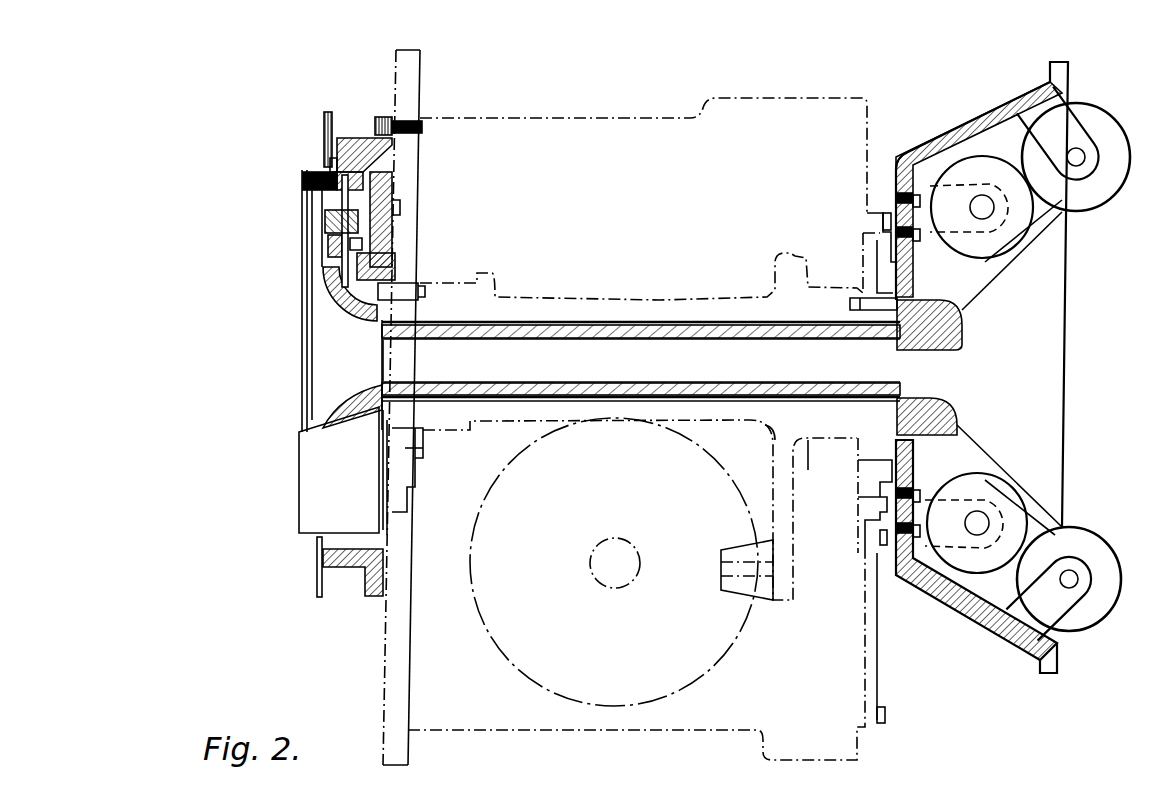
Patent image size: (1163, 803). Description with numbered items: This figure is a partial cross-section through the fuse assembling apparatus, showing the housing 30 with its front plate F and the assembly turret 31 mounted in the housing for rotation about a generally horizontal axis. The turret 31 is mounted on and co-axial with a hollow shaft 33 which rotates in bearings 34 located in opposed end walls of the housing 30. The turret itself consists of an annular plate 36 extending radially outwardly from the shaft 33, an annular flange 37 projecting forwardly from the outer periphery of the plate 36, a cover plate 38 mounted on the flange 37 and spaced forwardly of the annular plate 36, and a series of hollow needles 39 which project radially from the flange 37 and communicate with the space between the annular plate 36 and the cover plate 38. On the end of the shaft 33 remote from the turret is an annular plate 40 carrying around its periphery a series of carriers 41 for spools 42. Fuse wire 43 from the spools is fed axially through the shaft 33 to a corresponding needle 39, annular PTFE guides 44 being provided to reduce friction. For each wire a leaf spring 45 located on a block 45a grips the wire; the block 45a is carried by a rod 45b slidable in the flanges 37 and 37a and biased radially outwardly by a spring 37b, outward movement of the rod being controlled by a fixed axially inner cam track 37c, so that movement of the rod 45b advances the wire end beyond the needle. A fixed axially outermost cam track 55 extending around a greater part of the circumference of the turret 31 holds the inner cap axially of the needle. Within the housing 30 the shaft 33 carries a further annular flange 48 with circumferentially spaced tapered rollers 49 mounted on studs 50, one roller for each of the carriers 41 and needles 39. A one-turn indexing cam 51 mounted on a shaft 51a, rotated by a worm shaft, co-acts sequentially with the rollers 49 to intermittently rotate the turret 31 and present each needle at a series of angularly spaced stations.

The front plate F is at (416, 86).
The housing 30 is at (618, 145).
The assembly turret 31 is at (324, 473).
The hollow shaft 33 is at (412, 398).
The bearings 34 is at (408, 452).
The annular plate 36 is at (398, 272).
The annular flange 37 is at (392, 168).
The flange 37a is at (398, 256).
The spring 37b is at (348, 246).
The axially inner cam track 37c is at (343, 165).
The cover plate 38 is at (310, 290).
The hollow needles 39 is at (330, 140).
The annular plate 40 is at (905, 545).
The carriers 41 is at (1024, 620).
The spools 42 is at (1098, 545).
The fuse wire 43 is at (620, 333).
The annular PTFE guides 44 is at (350, 418).
The leaf spring 45 is at (338, 242).
The block 45a is at (335, 230).
The rod 45b is at (345, 200).
The annular flange 48 is at (778, 462).
The tapered rollers 49 is at (735, 582).
The studs 50 is at (740, 567).
The one-turn indexing cam 51 is at (708, 668).
The shaft 51a is at (600, 580).
The axially outermost cam track 55 is at (330, 163).